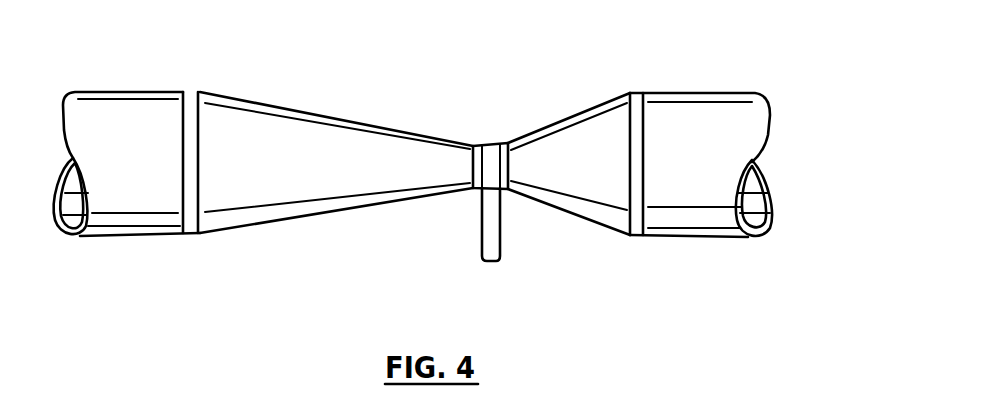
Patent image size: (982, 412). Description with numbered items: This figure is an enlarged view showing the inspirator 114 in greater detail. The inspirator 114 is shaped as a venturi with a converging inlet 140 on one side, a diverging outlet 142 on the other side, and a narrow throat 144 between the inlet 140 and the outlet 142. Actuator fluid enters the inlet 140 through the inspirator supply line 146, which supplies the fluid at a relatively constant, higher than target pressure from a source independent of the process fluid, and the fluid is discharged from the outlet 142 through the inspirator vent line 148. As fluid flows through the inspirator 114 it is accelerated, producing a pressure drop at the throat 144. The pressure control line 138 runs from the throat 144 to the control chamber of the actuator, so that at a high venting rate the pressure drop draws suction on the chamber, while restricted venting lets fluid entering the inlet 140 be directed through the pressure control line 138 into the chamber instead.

The inspirator 114 is at (615, 72).
The pressure control line 138 is at (481, 232).
The converging inlet 140 is at (263, 175).
The diverging outlet 142 is at (607, 177).
The throat 144 is at (487, 160).
The inspirator supply line 146 is at (122, 106).
The inspirator vent line 148 is at (738, 118).